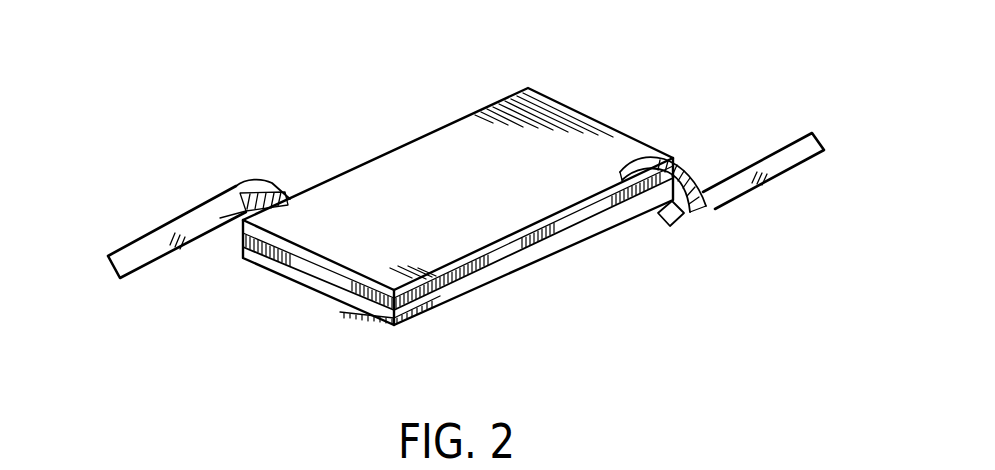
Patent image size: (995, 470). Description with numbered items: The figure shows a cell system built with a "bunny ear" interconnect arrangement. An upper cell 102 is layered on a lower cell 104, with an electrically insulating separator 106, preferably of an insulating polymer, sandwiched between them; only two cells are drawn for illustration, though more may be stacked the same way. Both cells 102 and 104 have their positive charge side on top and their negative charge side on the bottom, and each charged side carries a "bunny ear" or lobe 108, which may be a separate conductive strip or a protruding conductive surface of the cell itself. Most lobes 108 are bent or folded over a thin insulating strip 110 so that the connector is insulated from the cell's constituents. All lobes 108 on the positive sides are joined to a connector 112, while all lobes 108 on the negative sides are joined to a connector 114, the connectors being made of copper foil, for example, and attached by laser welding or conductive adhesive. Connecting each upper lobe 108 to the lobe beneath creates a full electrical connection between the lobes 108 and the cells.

The cell 102 is at (583, 116).
The cell 104 is at (265, 265).
The electrically insulating separator 106 is at (368, 298).
The lobe 108 is at (232, 193).
The insulating strip 110 is at (676, 170).
The connector 112 is at (777, 178).
The connector 114 is at (151, 234).